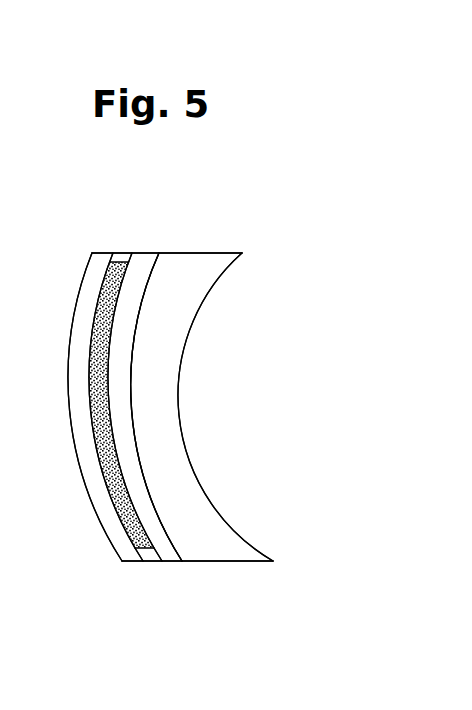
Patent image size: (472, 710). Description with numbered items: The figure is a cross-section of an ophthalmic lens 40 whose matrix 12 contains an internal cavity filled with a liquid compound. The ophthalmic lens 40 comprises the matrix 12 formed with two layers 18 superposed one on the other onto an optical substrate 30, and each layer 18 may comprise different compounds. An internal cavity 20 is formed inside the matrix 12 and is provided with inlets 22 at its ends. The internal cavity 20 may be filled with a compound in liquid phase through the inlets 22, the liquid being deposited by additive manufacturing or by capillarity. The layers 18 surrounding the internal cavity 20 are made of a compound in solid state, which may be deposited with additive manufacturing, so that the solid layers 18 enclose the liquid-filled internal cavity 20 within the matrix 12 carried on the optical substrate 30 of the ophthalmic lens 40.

The matrix 12 is at (114, 244).
The layers 18 is at (153, 513).
The internal cavity 20 is at (112, 373).
The inlets 22 is at (123, 257).
The optical substrate 30 is at (187, 518).
The ophthalmic lens 40 is at (250, 225).